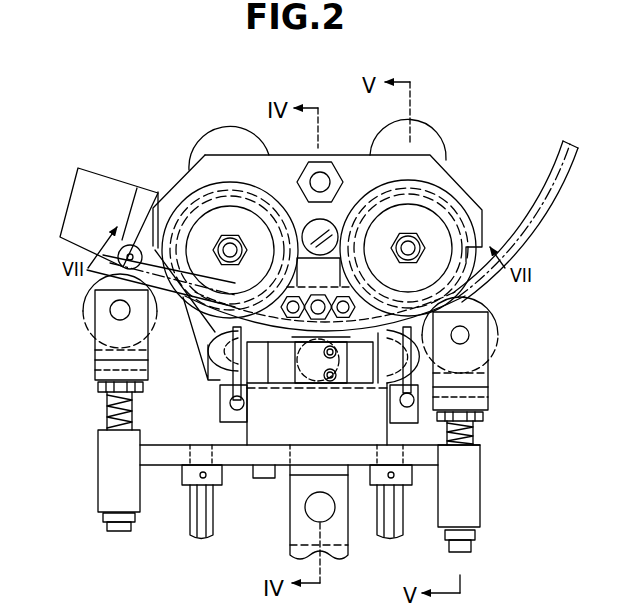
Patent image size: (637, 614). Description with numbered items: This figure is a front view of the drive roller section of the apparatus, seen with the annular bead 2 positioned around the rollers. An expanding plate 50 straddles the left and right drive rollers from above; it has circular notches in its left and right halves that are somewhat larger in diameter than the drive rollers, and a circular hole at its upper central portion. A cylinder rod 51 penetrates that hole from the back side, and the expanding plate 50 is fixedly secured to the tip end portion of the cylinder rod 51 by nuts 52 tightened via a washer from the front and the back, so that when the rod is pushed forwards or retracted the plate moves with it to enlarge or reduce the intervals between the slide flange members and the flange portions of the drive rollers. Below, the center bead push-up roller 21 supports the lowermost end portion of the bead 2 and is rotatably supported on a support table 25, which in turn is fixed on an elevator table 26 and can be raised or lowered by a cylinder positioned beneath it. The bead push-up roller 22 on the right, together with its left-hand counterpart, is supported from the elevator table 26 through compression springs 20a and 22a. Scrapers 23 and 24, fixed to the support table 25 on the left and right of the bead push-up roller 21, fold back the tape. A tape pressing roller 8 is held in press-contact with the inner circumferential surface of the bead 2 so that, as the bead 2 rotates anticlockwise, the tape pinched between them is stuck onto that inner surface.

The bead 2 is at (556, 206).
The tape pressing roller 8 is at (113, 242).
The compression spring 20a is at (107, 402).
The bead push-up roller 21 is at (297, 393).
The bead push-up roller 22 is at (498, 330).
The compression spring 22a is at (478, 430).
The scraper 23 is at (212, 377).
The scraper 24 is at (420, 338).
The support table 25 is at (318, 414).
The elevator table 26 is at (243, 467).
The expanding plate 50 is at (365, 165).
The cylinder rod 51 is at (308, 163).
The nuts 52 is at (334, 159).